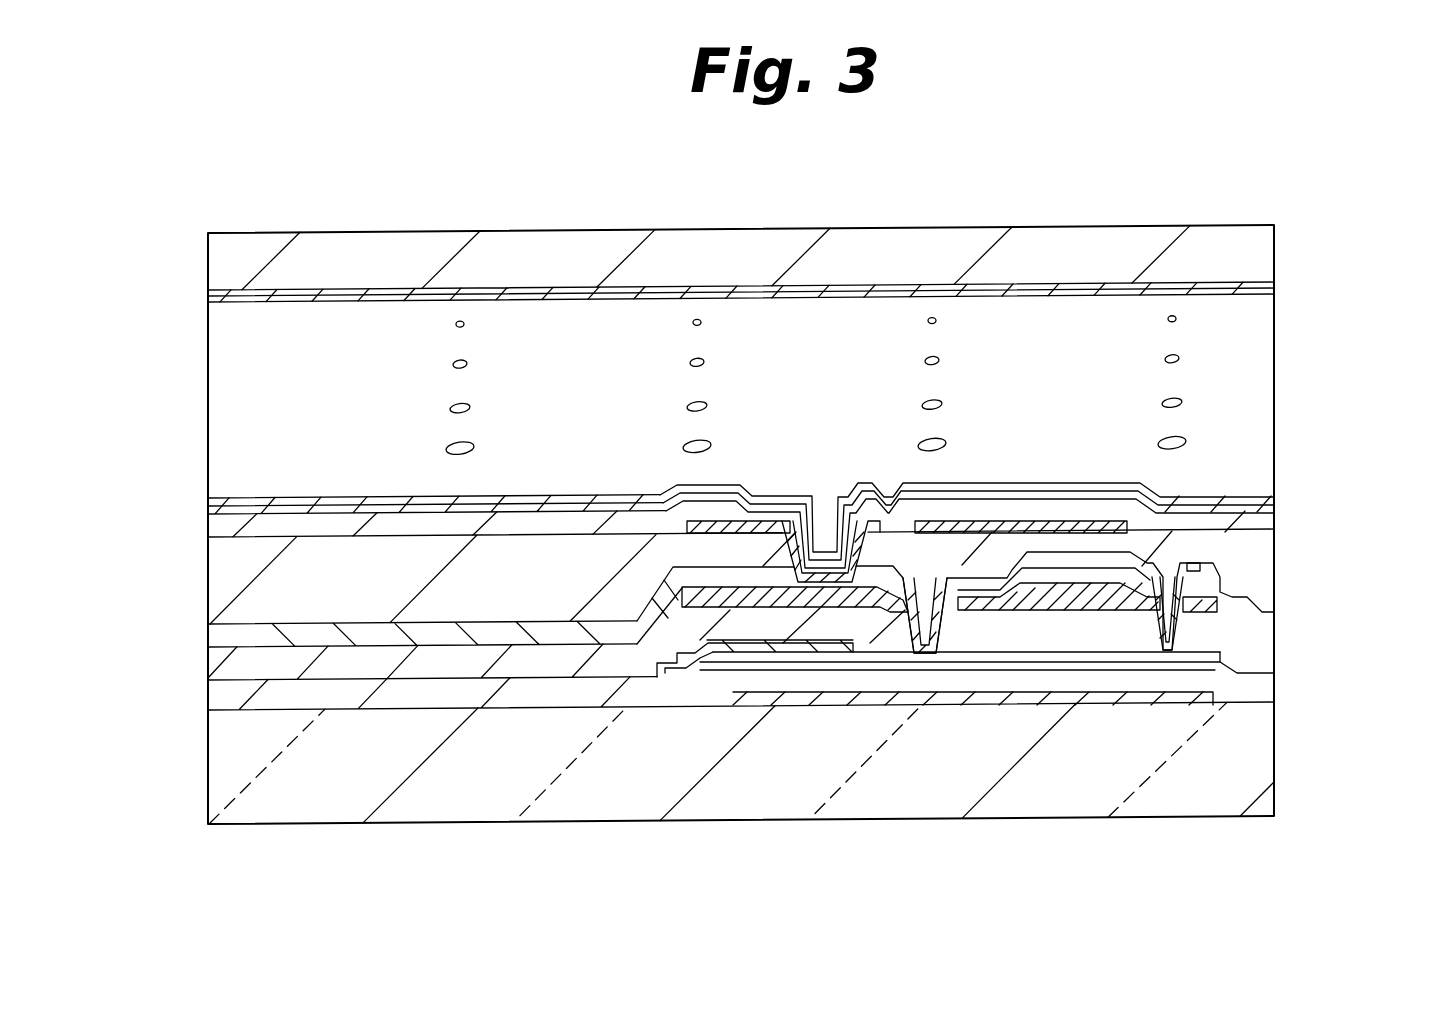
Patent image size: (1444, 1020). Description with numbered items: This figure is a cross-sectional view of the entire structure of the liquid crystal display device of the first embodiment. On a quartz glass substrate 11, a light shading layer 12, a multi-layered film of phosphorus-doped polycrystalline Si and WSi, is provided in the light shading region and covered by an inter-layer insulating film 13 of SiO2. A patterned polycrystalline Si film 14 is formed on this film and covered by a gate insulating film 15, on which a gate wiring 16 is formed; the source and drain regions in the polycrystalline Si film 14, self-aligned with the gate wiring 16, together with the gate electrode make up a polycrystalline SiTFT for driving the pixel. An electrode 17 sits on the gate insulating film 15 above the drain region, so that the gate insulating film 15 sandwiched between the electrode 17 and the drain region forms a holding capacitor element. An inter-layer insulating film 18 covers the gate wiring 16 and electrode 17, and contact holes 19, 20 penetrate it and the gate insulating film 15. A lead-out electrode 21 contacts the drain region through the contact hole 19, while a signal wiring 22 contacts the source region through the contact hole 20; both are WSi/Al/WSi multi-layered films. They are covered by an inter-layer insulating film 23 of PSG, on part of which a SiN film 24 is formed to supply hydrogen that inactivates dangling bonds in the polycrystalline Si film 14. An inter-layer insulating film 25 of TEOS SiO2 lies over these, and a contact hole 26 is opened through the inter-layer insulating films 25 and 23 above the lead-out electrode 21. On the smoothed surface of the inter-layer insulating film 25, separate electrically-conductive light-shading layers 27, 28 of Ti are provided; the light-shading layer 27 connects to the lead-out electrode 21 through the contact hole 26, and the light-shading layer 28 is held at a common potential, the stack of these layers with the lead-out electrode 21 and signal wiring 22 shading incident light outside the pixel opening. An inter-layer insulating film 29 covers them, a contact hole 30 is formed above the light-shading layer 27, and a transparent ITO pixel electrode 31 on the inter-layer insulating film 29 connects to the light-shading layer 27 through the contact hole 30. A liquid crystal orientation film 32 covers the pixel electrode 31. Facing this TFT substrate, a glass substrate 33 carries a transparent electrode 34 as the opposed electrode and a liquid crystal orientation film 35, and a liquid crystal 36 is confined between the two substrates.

The quartz glass substrate 11 is at (1255, 768).
The light shading layer 12 is at (1000, 668).
The inter-layer insulating film 13 is at (1253, 692).
The polycrystalline Si film 14 is at (1003, 665).
The gate insulating film 15 is at (1050, 655).
The gate wiring 16 is at (1100, 655).
The electrode 17 is at (735, 648).
The inter-layer insulating film 18 is at (1253, 657).
The contact hole 19 is at (937, 650).
The contact hole 20 is at (1172, 655).
The lead-out electrode 21 is at (753, 610).
The signal wiring 22 is at (1220, 607).
The inter-layer insulating film 23 is at (1262, 622).
The SiN film 24 is at (1205, 567).
The inter-layer insulating film 25 is at (1255, 545).
The contact hole 26 is at (823, 540).
The electrically-conductive light-shading layer 27 is at (677, 485).
The electrically-conductive light-shading layer 28 is at (1022, 521).
The inter-layer insulating film 29 is at (1255, 517).
The contact hole 30 is at (752, 496).
The pixel electrode 31 is at (208, 509).
The liquid crystal orientation film 32 is at (208, 502).
The glass substrate 33 is at (1245, 243).
The transparent electrode 34 is at (1277, 288).
The liquid crystal orientation film 35 is at (1278, 296).
The liquid crystal 36 is at (1255, 372).